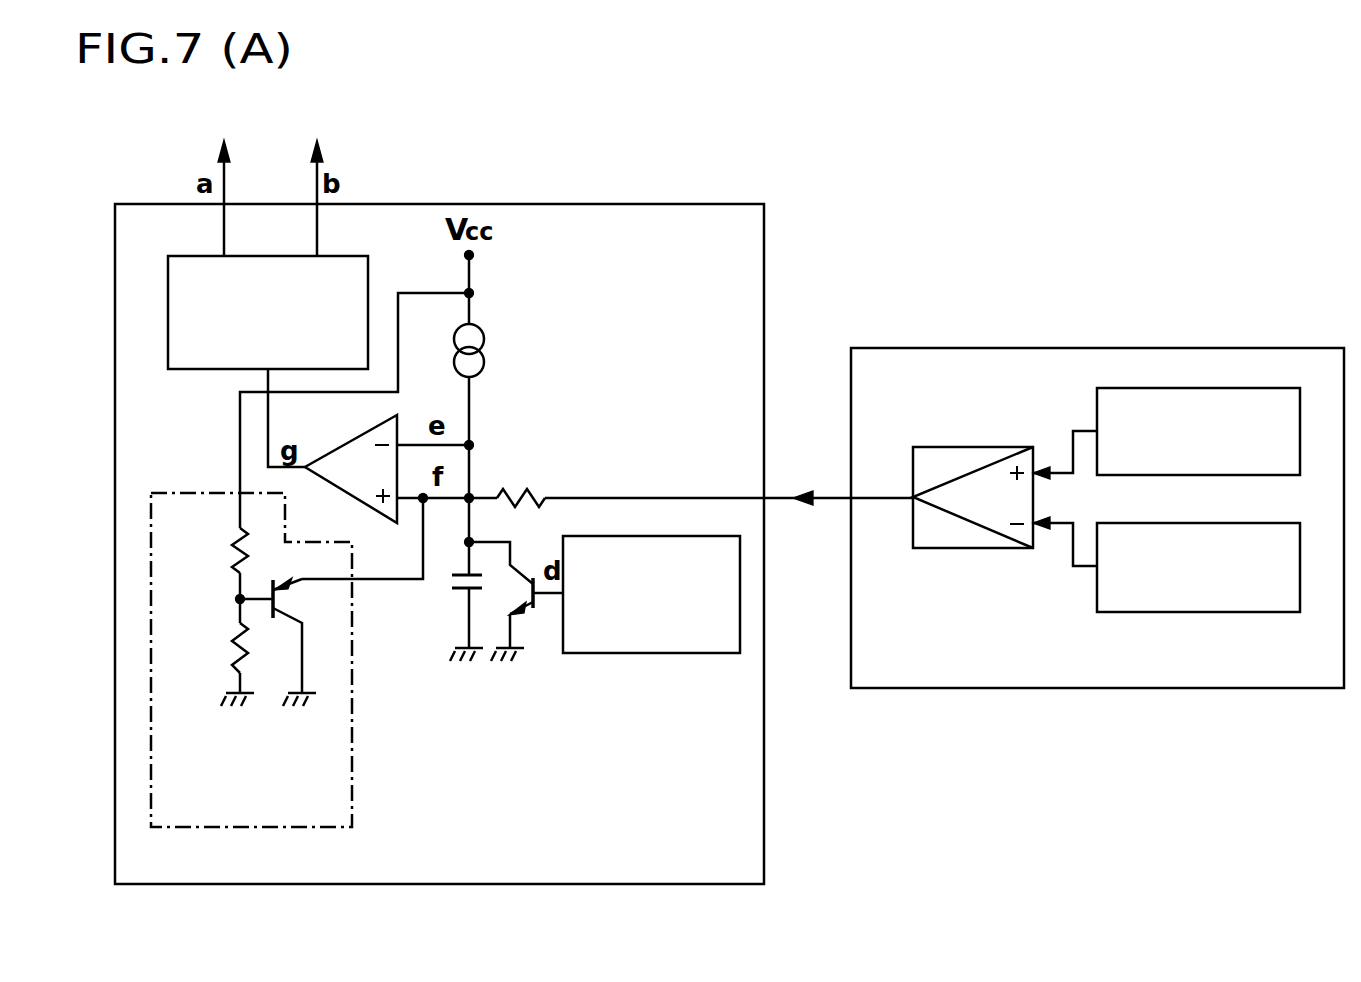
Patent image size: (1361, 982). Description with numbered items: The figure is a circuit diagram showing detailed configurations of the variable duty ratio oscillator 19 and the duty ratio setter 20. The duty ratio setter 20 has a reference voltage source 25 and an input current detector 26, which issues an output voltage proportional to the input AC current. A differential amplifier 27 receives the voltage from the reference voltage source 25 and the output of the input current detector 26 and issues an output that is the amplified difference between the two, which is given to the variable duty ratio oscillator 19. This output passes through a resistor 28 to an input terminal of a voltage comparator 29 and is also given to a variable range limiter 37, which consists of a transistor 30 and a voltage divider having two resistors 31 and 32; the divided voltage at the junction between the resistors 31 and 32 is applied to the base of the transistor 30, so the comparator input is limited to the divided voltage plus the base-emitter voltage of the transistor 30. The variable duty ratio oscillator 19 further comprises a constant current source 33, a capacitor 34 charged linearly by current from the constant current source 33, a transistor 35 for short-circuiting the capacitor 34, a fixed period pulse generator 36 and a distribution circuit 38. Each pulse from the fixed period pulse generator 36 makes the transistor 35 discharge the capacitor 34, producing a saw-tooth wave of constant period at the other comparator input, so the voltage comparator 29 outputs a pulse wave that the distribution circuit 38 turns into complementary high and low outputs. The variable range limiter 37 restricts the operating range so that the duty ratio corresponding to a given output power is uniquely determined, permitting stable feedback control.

The variable duty ratio oscillator 19 is at (764, 855).
The duty ratio setter 20 is at (924, 688).
The reference voltage source 25 is at (1290, 388).
The input current detector 26 is at (1270, 612).
The differential amplifier 27 is at (980, 447).
The resistor 28 is at (524, 494).
The voltage comparator 29 is at (350, 478).
The transistor 30 is at (296, 604).
The resistor 31 is at (232, 552).
The resistor 32 is at (232, 640).
The constant current source 33 is at (484, 340).
The capacitor 34 is at (455, 590).
The transistor 35 is at (524, 612).
The fixed period pulse generator 36 is at (690, 536).
The variable range limiter 37 is at (352, 794).
The distribution circuit 38 is at (368, 256).